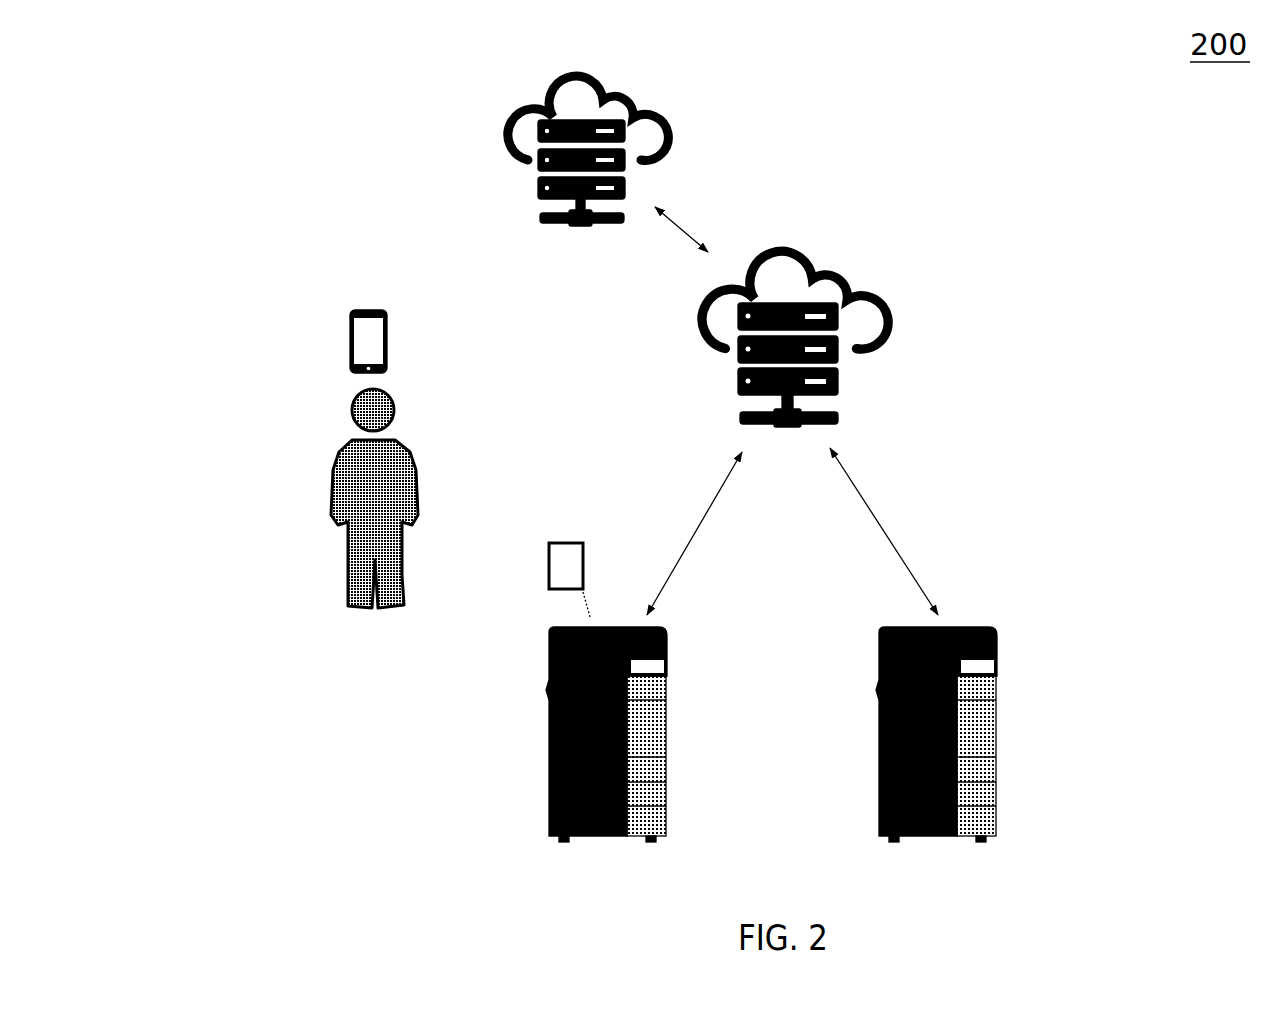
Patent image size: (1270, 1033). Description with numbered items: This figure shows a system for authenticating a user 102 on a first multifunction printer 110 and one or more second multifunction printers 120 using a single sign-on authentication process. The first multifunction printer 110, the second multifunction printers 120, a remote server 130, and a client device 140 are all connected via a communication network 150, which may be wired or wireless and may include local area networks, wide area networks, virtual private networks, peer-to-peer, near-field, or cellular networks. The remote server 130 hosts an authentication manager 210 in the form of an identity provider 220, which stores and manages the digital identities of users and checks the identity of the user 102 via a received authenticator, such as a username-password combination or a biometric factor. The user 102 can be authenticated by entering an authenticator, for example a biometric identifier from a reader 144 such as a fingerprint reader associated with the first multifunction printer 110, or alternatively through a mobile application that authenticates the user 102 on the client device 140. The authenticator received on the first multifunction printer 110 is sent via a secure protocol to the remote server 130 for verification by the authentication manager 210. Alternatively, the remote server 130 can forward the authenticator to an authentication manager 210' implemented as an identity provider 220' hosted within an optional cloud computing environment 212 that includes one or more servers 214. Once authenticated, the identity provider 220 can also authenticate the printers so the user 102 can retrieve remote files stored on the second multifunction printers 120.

The user 102 is at (312, 428).
The first multifunction printer 110 is at (507, 684).
The second multifunction printer 120 is at (1047, 680).
The remote server 130 is at (780, 320).
The client device 140 is at (312, 318).
The reader 144 is at (530, 543).
The communication network 150 is at (708, 210).
The authentication manager 210 is at (780, 365).
The identity provider 220 is at (699, 349).
The authentication manager 210' is at (548, 170).
The identity provider 220' is at (640, 98).
The cloud computing environment 212 is at (475, 188).
The servers 214 is at (527, 225).